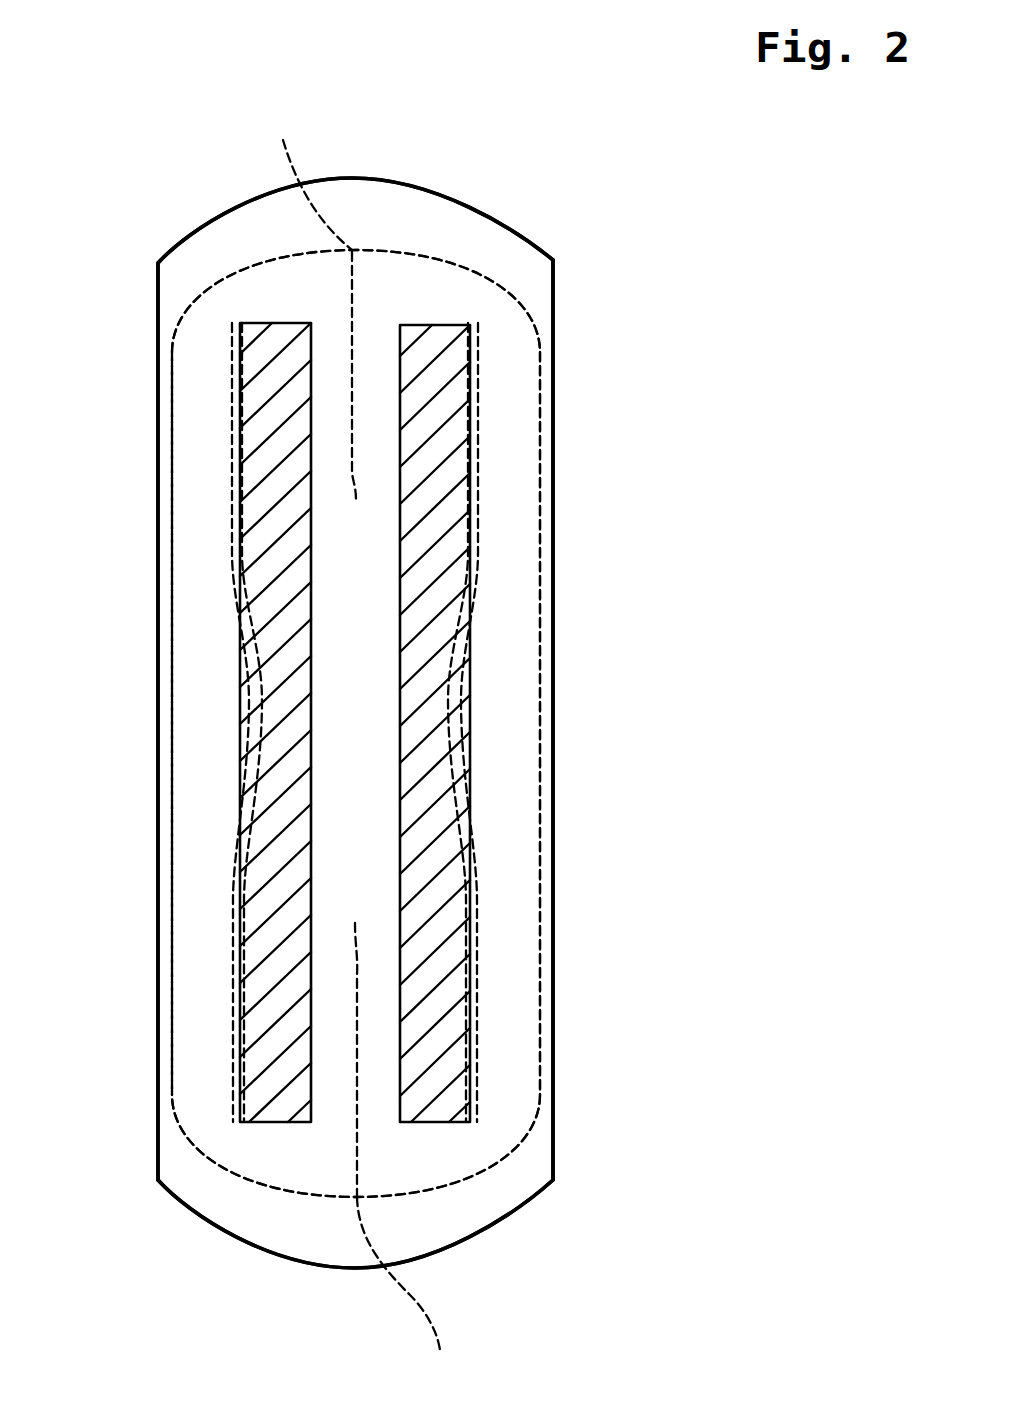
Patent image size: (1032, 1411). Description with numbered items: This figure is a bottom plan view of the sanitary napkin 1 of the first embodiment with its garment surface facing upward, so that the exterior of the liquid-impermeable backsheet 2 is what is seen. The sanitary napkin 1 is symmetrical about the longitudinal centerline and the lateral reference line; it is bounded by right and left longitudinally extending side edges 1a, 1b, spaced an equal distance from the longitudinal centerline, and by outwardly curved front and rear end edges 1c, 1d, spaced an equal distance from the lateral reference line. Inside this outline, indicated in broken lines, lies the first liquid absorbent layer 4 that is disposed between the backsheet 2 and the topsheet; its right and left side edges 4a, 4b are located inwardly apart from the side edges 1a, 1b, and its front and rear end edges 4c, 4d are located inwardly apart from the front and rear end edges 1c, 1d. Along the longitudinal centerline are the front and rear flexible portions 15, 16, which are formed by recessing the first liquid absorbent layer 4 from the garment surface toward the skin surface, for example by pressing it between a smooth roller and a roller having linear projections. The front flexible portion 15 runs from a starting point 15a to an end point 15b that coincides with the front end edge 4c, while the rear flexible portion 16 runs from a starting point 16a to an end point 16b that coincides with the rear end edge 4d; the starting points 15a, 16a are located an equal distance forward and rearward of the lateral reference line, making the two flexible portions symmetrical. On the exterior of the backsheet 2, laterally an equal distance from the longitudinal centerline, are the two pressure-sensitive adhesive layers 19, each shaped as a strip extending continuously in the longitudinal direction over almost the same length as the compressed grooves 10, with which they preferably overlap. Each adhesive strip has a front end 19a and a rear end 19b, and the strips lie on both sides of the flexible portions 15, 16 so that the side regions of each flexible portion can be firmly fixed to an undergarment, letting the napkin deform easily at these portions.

The sanitary napkin 1 is at (726, 380).
The right side edge 1a is at (158, 767).
The left side edge 1b is at (553, 775).
The front end edge 1c is at (356, 178).
The rear end edge 1d is at (354, 1268).
The liquid-impermeable backsheet 2 is at (530, 290).
The first liquid absorbent layer 4 is at (522, 630).
The right side edge of first liquid absorbent layer 4a is at (172, 610).
The left side edge of first liquid absorbent layer 4b is at (540, 550).
The front end edge of first liquid absorbent layer 4c is at (353, 333).
The rear end edge of first liquid absorbent layer 4d is at (332, 1194).
The compressed grooves 10 is at (232, 477).
The front flexible portion 15 is at (398, 335).
The starting point of front flexible portion 15a is at (353, 411).
The end point of front flexible portion 15b is at (303, 176).
The rear flexible portion 16 is at (352, 1116).
The starting point of rear flexible portion 16a is at (355, 1038).
The end point of rear flexible portion 16b is at (418, 1293).
The pressure-sensitive adhesive layers 19 is at (270, 1000).
The front ends of pressure-sensitive adhesive layers 19a is at (276, 323).
The rear ends of pressure-sensitive adhesive layers 19b is at (260, 1125).